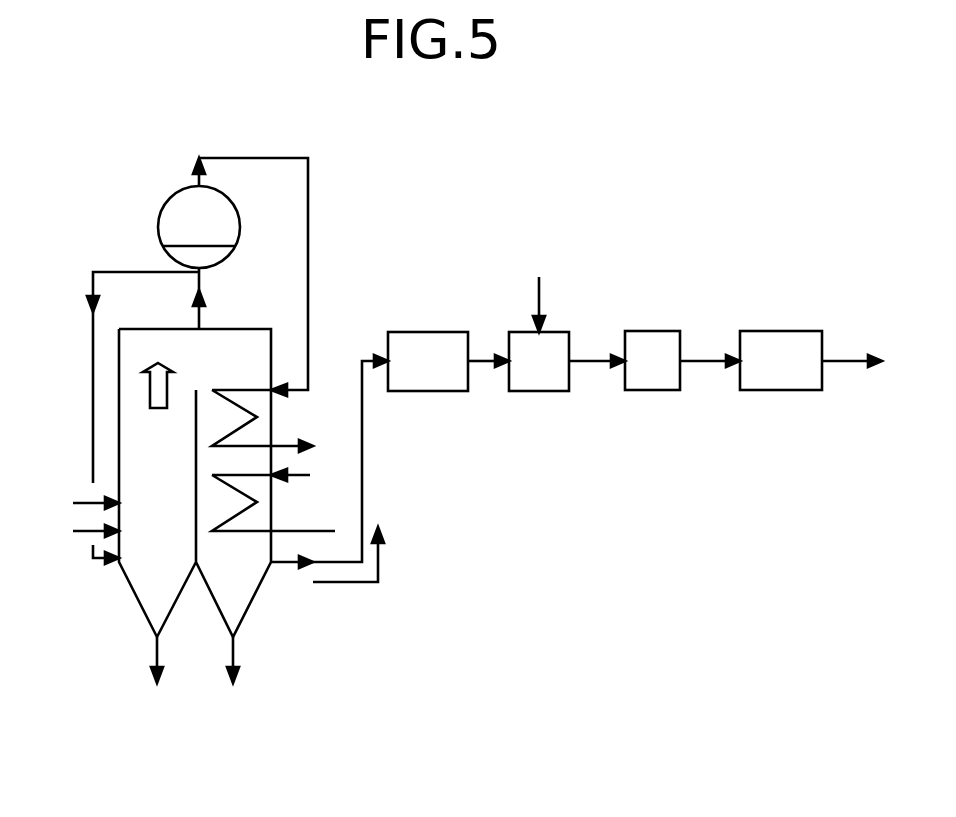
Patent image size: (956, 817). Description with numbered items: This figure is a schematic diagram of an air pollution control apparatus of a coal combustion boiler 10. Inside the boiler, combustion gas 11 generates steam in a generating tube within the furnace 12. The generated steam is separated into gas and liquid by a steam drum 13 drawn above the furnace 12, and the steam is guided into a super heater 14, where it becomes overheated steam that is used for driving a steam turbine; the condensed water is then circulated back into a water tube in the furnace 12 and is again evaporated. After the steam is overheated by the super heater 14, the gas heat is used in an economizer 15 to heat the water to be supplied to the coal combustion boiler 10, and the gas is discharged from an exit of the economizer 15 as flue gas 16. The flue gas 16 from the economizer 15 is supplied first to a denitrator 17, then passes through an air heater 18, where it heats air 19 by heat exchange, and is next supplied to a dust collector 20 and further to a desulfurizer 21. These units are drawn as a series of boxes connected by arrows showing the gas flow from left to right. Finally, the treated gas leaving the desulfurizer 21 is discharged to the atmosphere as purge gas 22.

The coal combustion boiler 10 is at (104, 618).
The combustion gas 11 is at (148, 392).
The furnace 12 is at (117, 443).
The steam drum 13 is at (173, 192).
The super heater 14 is at (234, 362).
The economizer 15 is at (237, 563).
The flue gas 16 is at (353, 582).
The denitrator 17 is at (408, 332).
The air heater 18 is at (532, 391).
The air 19 is at (543, 296).
The dust collector 20 is at (645, 390).
The desulfurizer 21 is at (770, 390).
The purge gas 22 is at (845, 358).